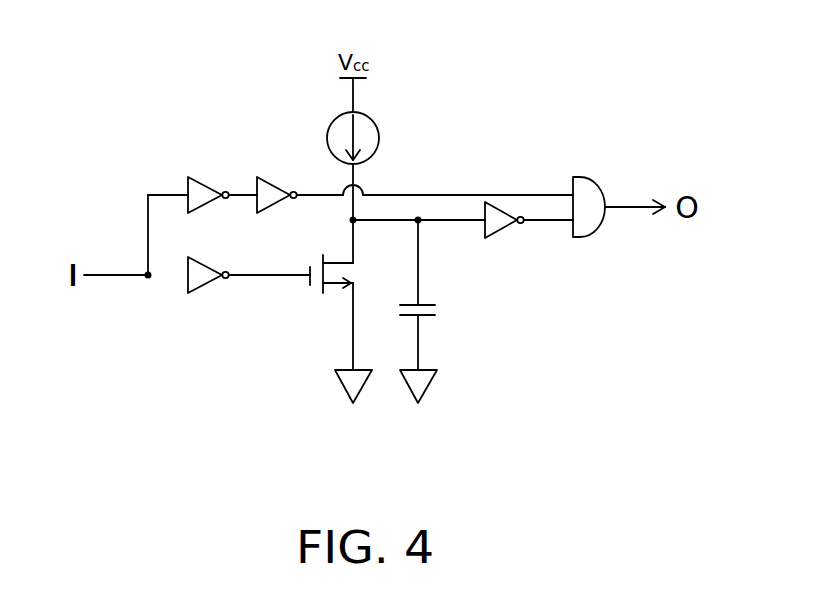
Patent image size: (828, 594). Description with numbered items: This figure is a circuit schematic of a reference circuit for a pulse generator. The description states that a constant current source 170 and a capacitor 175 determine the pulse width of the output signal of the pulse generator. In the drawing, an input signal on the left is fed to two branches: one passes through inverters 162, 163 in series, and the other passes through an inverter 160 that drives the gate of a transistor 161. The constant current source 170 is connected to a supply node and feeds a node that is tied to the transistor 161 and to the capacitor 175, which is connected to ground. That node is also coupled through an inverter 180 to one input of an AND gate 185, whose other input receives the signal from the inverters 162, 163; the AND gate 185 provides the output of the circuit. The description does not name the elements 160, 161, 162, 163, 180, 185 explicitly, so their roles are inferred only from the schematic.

The inverter 160 is at (207, 285).
The transistor 161 is at (325, 292).
The inverter 162 is at (208, 177).
The inverter 163 is at (274, 177).
The constant current source 170 is at (375, 138).
The capacitor 175 is at (439, 312).
The inverter 180 is at (500, 228).
The AND gate 185 is at (593, 233).